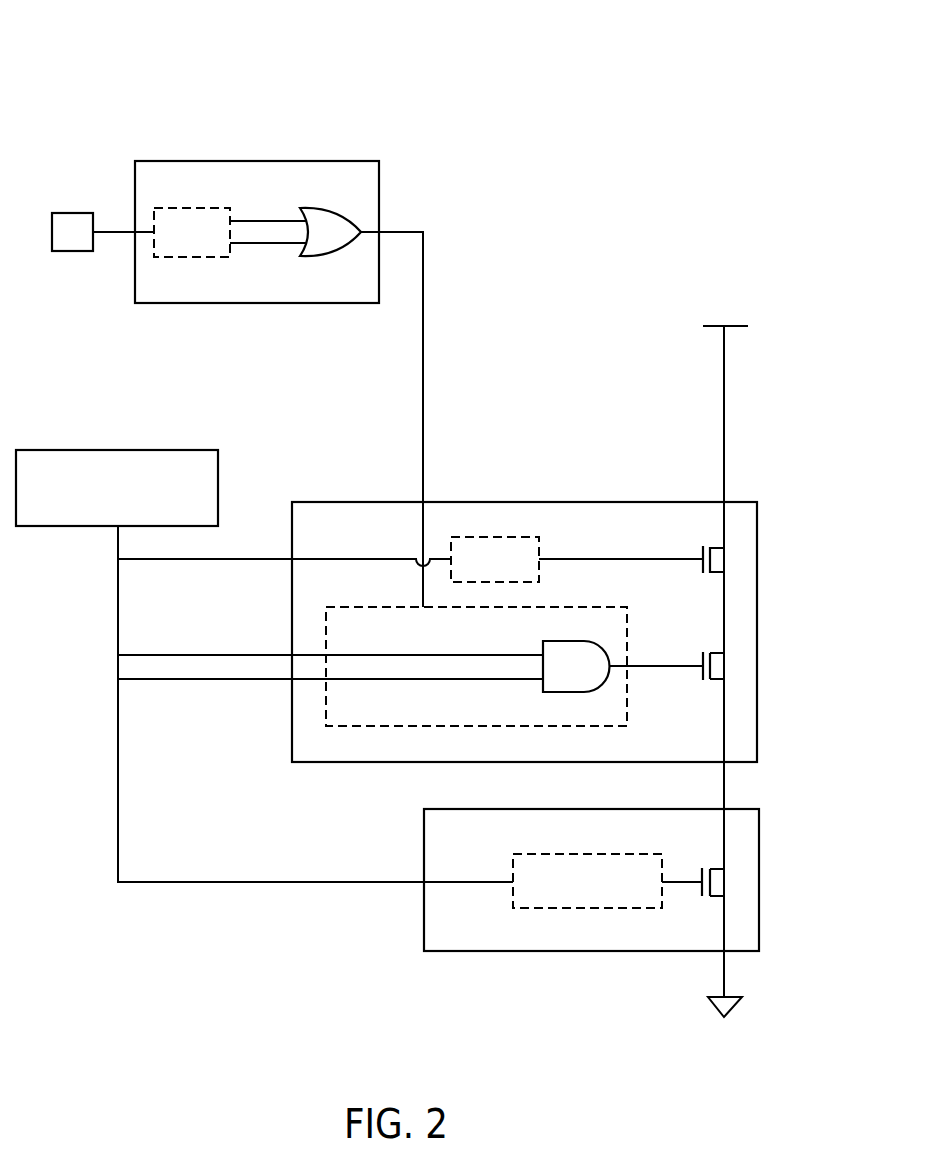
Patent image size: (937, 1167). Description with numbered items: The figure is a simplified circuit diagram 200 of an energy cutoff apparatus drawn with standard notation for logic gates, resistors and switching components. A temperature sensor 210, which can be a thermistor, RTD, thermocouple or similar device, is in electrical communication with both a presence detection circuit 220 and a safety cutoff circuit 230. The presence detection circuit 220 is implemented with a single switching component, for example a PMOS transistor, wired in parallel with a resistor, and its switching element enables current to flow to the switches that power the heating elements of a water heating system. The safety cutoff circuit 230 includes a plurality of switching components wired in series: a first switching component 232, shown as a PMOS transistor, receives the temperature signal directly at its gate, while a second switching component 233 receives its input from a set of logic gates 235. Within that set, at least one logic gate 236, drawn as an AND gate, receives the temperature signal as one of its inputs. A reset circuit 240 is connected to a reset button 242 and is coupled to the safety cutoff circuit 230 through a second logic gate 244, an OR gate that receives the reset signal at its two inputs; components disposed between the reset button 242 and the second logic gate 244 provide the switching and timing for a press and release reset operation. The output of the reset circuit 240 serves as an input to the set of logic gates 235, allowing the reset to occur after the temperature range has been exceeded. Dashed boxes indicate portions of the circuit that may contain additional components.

The simplified circuit diagram 200 is at (136, 44).
The temperature sensor 210 is at (116, 450).
The presence detection circuit 220 is at (591, 951).
The safety cutoff circuit 230 is at (475, 502).
The first switching component 232 is at (718, 547).
The second switching component 233 is at (718, 653).
The set of logic gates 235 is at (368, 727).
The logic gate 236 is at (561, 641).
The reset circuit 240 is at (246, 161).
The reset button 242 is at (72, 213).
The second logic gate 244 is at (316, 207).